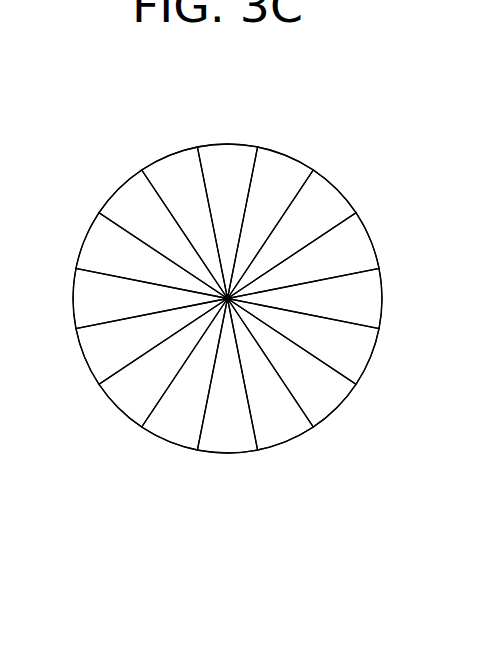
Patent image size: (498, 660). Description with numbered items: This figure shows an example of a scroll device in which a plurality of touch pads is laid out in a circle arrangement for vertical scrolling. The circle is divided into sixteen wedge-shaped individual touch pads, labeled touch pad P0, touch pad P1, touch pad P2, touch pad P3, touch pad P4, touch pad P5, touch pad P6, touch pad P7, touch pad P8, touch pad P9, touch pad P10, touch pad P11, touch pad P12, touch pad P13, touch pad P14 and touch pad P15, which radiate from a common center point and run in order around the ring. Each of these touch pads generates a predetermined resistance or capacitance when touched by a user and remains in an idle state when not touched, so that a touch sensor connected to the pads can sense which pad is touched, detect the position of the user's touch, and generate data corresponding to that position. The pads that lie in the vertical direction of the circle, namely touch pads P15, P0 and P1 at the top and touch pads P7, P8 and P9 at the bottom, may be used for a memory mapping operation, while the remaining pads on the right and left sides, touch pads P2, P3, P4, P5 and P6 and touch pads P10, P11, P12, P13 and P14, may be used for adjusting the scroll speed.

The touch pad P0 is at (227, 221).
The touch pad P1 is at (271, 223).
The touch pad P2 is at (292, 234).
The touch pad P3 is at (304, 256).
The touch pad P4 is at (305, 298).
The touch pad P5 is at (304, 342).
The touch pad P6 is at (292, 363).
The touch pad P7 is at (271, 375).
The touch pad P8 is at (227, 376).
The touch pad P9 is at (185, 375).
The touch pad P10 is at (163, 363).
The touch pad P11 is at (152, 342).
The touch pad P12 is at (150, 298).
The touch pad P13 is at (152, 256).
The touch pad P14 is at (163, 234).
The touch pad P15 is at (185, 223).